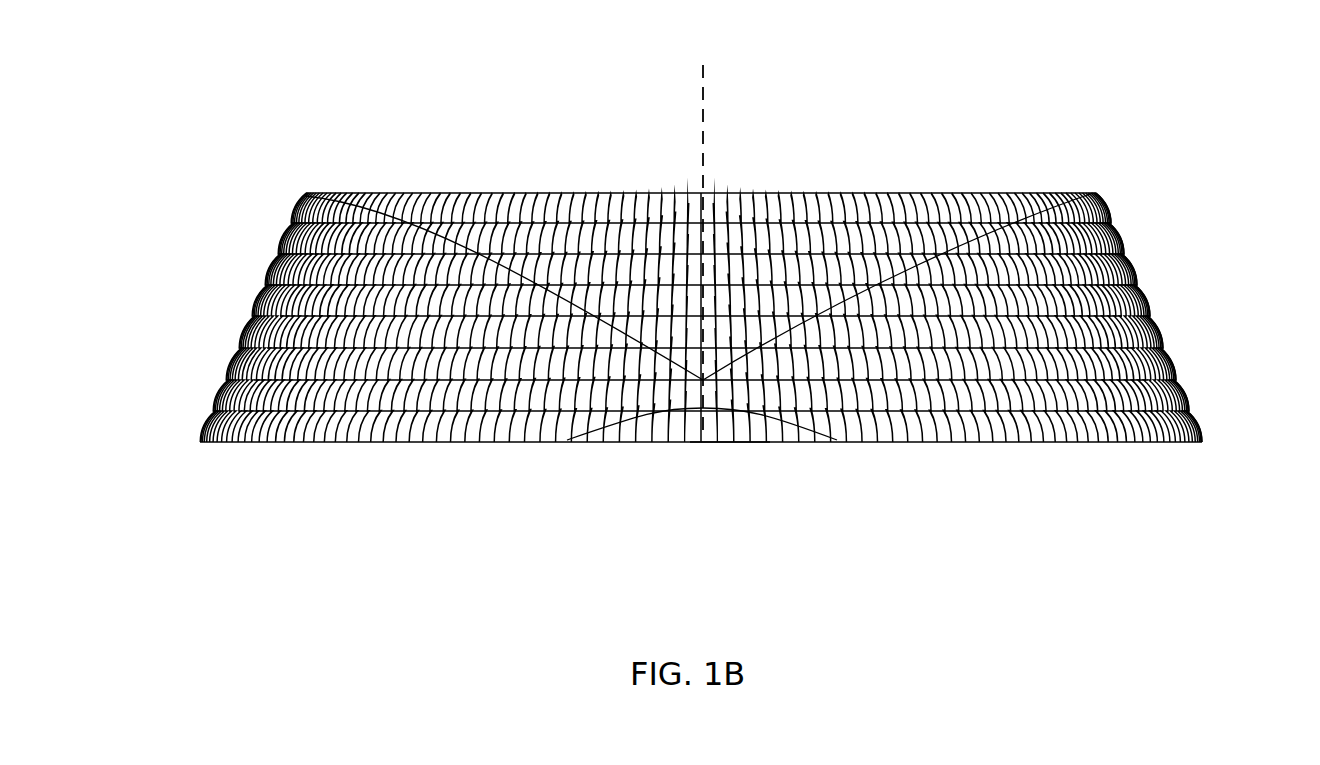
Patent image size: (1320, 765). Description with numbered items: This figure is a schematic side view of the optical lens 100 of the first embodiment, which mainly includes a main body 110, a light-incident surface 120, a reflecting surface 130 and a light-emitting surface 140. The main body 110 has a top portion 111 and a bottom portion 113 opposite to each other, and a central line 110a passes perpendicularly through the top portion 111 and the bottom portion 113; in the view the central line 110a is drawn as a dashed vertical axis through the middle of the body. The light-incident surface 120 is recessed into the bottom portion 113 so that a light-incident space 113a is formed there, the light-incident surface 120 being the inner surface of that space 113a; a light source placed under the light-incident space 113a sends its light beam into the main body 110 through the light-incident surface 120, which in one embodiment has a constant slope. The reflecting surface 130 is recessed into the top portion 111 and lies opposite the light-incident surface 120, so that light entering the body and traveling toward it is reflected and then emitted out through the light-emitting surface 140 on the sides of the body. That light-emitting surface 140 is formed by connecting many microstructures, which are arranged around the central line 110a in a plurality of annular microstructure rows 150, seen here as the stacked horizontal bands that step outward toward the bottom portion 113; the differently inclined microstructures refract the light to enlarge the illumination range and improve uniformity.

The optical lens 100 is at (187, 89).
The main body 110 is at (1090, 302).
The central line 110a is at (705, 75).
The top portion 111 is at (1094, 191).
The bottom portion 113 is at (1118, 443).
The light-incident space 113a is at (728, 442).
The light-incident surface 120 is at (617, 442).
The reflecting surface 130 is at (878, 288).
The light-emitting surface 140 is at (1187, 359).
The microstructure rows 150 is at (263, 222).